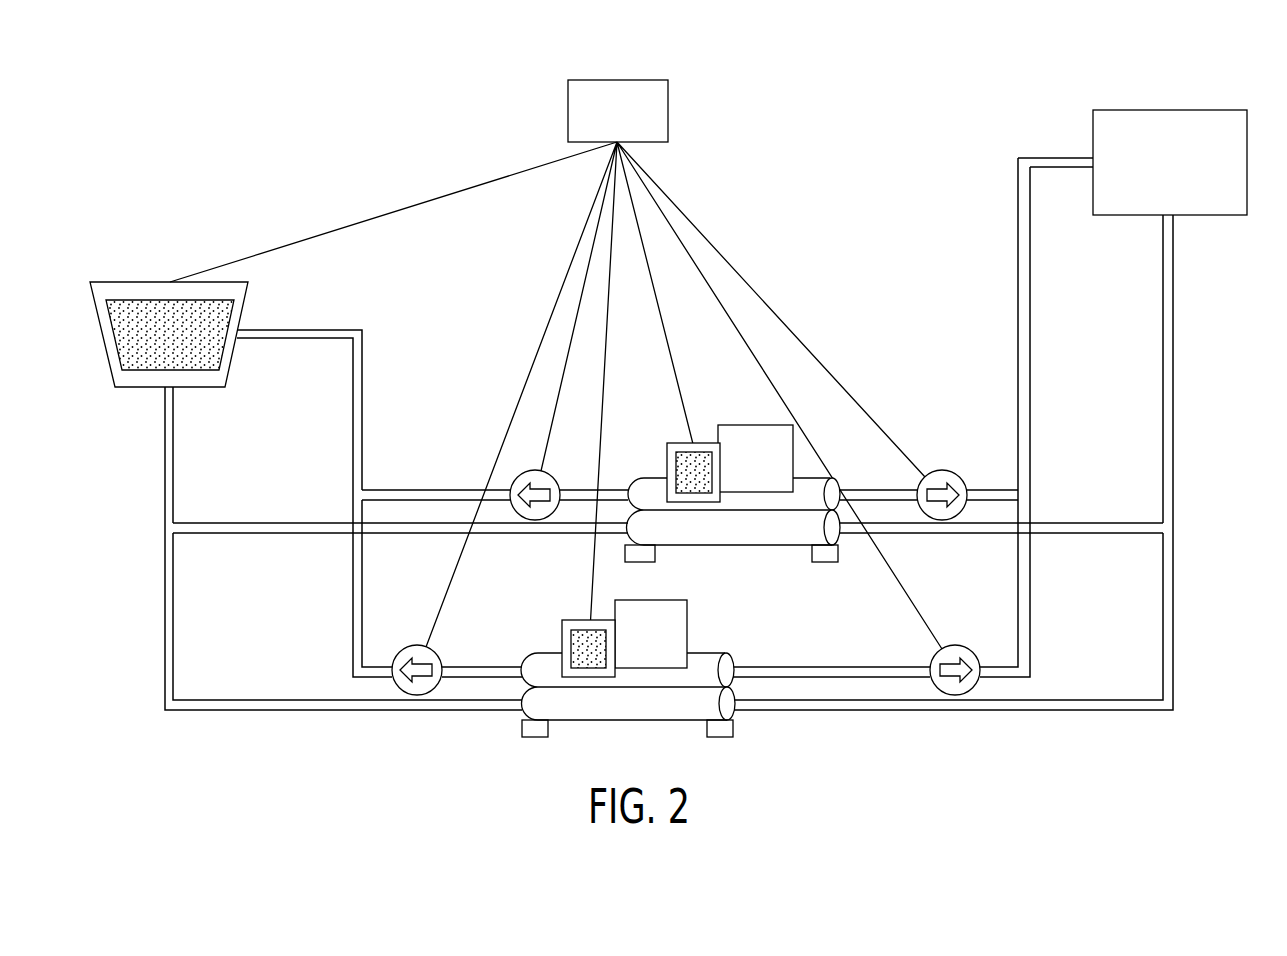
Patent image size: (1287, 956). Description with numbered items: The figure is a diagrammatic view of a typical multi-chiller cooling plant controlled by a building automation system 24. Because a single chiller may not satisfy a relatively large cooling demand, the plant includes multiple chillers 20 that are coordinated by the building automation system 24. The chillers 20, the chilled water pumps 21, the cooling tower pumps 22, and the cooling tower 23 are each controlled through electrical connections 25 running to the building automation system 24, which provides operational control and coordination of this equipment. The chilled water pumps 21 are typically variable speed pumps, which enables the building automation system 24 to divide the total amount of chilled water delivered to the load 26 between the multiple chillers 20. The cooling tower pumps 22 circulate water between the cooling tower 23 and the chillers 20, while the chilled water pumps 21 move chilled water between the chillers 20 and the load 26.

The chillers 20 is at (700, 533).
The chilled water pumps 21 is at (960, 512).
The cooling tower pumps 22 is at (437, 653).
The cooling tower 23 is at (150, 282).
The building automation system 24 is at (668, 112).
The electrical connections 25 is at (603, 377).
The load 26 is at (1170, 110).